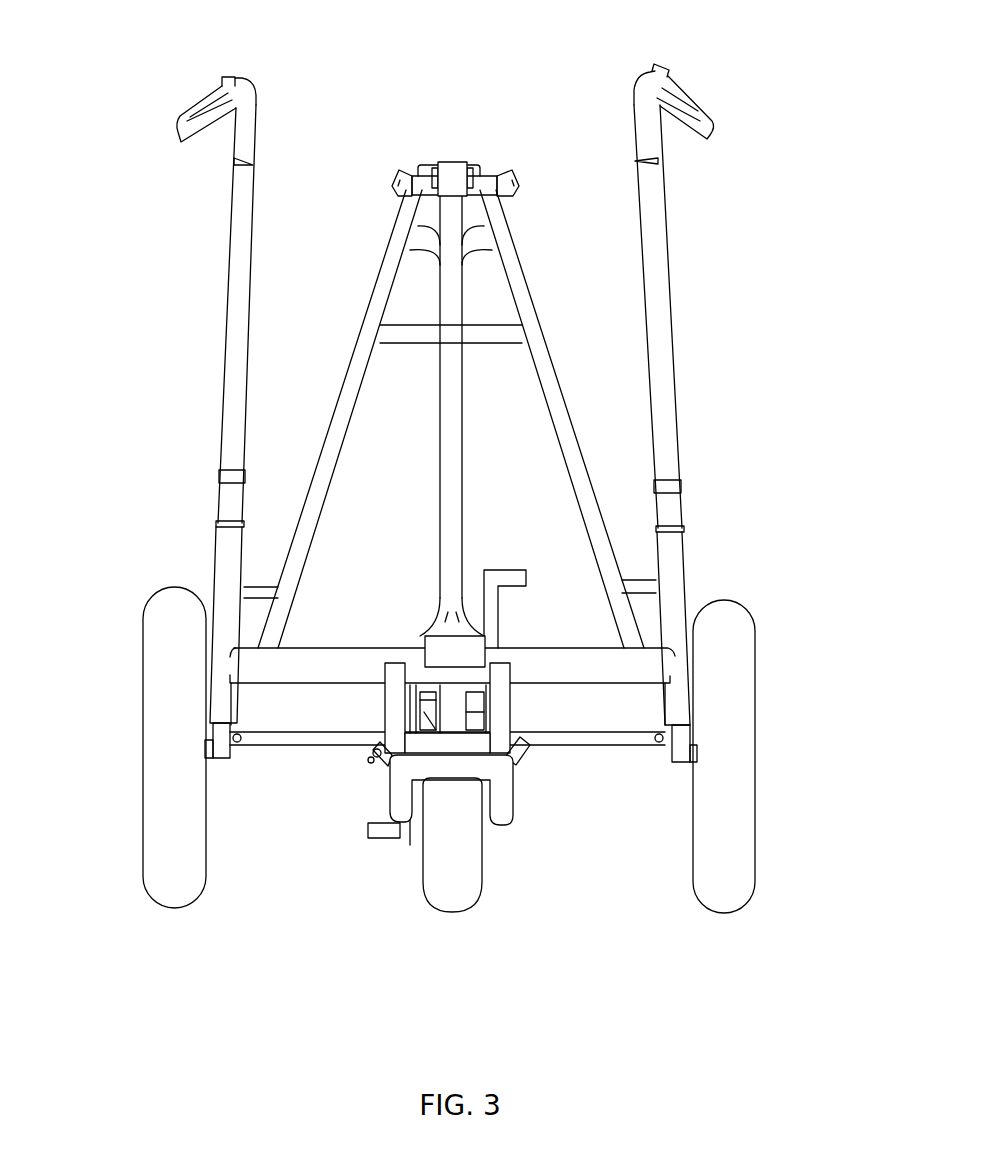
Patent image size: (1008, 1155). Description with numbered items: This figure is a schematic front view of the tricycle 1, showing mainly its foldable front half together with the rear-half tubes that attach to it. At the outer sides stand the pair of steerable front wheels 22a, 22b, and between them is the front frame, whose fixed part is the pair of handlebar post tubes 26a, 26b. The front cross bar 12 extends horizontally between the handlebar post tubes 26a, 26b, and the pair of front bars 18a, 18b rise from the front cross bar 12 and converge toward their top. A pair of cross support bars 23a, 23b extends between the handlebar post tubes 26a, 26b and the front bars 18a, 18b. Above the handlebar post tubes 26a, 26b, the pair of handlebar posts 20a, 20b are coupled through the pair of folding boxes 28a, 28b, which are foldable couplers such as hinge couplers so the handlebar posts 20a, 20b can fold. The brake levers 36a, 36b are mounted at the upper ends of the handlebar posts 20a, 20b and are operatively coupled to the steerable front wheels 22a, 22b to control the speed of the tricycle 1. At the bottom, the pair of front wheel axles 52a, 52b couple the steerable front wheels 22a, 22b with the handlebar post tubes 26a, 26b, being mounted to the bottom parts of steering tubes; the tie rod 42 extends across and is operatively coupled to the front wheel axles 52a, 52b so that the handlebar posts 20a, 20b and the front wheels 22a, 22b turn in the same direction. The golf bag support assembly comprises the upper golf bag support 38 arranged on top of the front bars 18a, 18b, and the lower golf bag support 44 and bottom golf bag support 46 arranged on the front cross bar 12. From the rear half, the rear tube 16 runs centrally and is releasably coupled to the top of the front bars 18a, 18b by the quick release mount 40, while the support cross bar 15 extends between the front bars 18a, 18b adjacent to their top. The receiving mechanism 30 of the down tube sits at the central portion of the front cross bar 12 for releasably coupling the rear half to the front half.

The tricycle 1 is at (750, 950).
The front cross bar 12 is at (332, 658).
The support cross bar 15 is at (405, 338).
The rear tube 16 is at (460, 432).
The front bar 18a is at (343, 400).
The front bar 18b is at (558, 400).
The handlebar post 20a is at (233, 298).
The handlebar post 20b is at (668, 303).
The steerable front wheel 22a is at (160, 790).
The steerable front wheel 22b is at (740, 783).
The cross support bar 23a is at (256, 590).
The cross support bar 23b is at (650, 586).
The handlebar post tube 26a is at (227, 567).
The handlebar post tube 26b is at (674, 574).
The folding box 28a is at (233, 477).
The folding box 28b is at (672, 487).
The receiving mechanism 30 is at (470, 648).
The brake lever 36a is at (207, 103).
The brake lever 36b is at (683, 98).
The upper golf bag support 38 is at (510, 178).
The quick release mount 40 is at (455, 172).
The tie rod 42 is at (300, 736).
The lower golf bag support 44 is at (380, 756).
The bottom golf bag support 46 is at (508, 805).
The front wheel axle 52a is at (224, 760).
The front wheel axle 52b is at (685, 762).